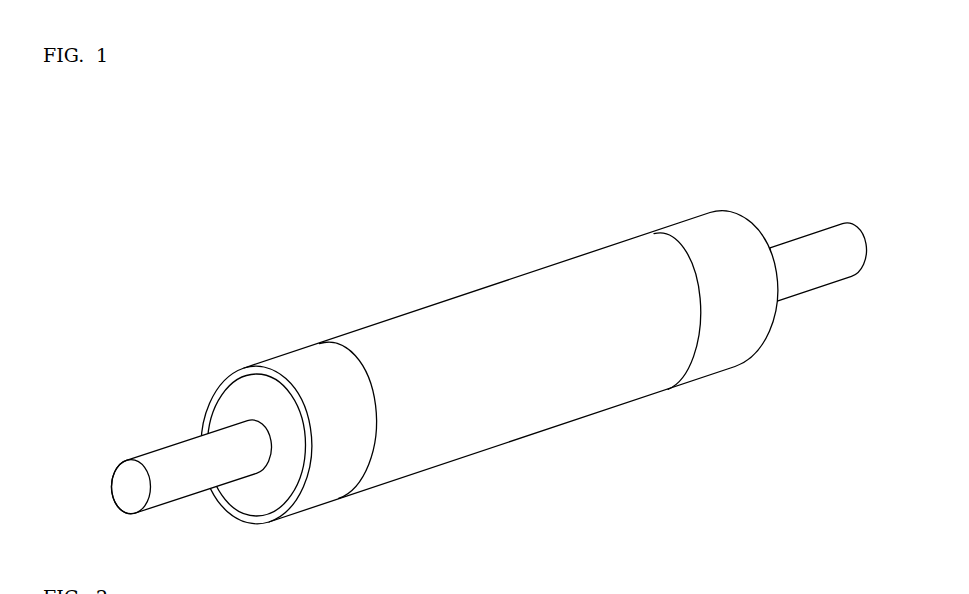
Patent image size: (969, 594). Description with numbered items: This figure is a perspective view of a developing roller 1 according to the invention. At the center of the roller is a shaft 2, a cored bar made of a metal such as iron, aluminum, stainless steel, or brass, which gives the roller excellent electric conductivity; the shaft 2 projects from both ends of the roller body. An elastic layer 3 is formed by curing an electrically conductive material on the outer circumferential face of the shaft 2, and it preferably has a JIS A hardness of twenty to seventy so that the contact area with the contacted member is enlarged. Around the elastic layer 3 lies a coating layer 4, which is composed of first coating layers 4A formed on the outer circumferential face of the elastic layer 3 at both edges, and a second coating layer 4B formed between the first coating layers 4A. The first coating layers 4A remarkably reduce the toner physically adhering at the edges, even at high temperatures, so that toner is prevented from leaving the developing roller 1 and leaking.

The developing roller 1 is at (488, 334).
The shaft 2 is at (488, 390).
The elastic layer 3 is at (255, 490).
The coating layer 4 is at (386, 310).
The first coating layers 4A is at (332, 480).
The second coating layer 4B is at (468, 440).